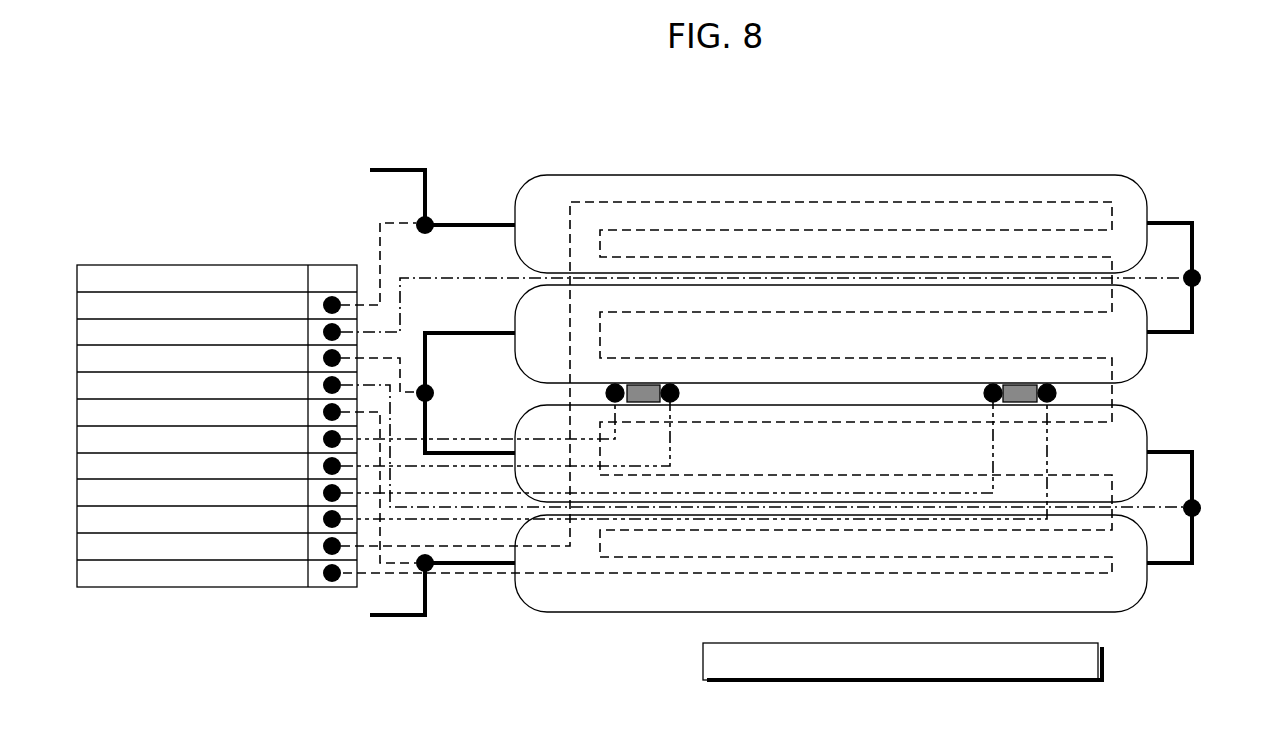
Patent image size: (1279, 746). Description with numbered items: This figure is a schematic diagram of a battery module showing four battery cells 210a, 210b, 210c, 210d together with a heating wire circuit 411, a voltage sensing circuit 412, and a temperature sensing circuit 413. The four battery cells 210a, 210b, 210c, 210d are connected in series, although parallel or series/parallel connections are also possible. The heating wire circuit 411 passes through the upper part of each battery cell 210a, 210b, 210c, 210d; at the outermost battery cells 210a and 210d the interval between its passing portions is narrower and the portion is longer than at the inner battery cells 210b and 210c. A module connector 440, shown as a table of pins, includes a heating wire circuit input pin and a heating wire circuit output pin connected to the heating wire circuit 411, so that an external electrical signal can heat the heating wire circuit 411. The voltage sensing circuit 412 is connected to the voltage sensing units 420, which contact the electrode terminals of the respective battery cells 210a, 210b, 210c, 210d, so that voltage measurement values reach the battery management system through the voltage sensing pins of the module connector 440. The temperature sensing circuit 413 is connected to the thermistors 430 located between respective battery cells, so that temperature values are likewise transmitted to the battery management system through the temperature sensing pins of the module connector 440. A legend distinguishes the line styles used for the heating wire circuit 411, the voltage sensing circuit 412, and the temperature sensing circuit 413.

The battery cell 210a is at (1135, 175).
The battery cell 210b is at (1150, 352).
The battery cell 210c is at (1150, 413).
The battery cell 210d is at (1150, 600).
The heating wire circuit 411 is at (712, 661).
The voltage sensing circuit 412 is at (845, 661).
The temperature sensing circuit 413 is at (983, 661).
The voltage sensing unit 420 is at (418, 220).
The thermistor 430 is at (645, 385).
The module connector 440 is at (172, 263).